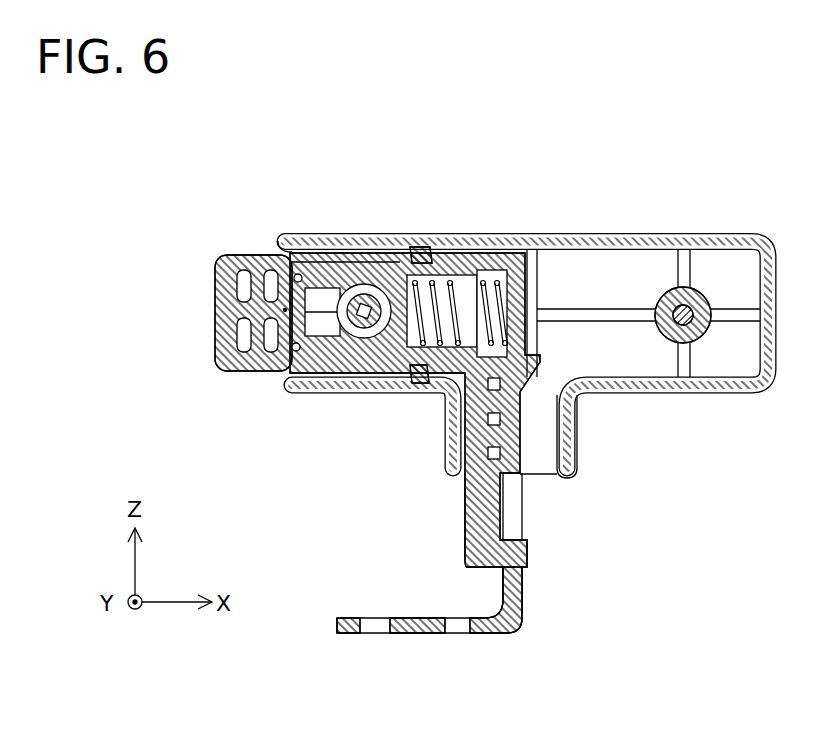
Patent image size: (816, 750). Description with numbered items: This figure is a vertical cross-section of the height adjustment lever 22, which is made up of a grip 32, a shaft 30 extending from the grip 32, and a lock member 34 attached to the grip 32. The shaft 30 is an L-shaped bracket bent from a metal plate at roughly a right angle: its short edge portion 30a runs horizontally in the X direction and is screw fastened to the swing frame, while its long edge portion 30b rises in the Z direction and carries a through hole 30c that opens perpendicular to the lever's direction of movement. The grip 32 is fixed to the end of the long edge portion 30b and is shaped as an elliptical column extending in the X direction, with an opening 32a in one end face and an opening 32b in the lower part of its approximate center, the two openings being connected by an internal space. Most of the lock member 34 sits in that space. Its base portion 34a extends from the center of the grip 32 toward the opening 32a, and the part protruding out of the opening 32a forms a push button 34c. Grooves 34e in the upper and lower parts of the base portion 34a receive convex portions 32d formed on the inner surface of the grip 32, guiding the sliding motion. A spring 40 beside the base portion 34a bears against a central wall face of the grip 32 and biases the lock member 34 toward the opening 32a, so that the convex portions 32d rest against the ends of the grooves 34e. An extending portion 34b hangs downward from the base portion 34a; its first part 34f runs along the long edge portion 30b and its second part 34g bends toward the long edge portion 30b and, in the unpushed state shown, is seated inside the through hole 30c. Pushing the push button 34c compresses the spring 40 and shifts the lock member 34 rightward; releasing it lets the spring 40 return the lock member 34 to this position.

The height adjustment lever 22 is at (174, 147).
The shaft 30 is at (521, 566).
The short edge portion 30a is at (422, 635).
The long edge portion 30b is at (513, 510).
The through hole 30c is at (504, 571).
The grip 32 is at (619, 231).
The opening 32a is at (276, 238).
The opening 32b is at (578, 466).
The convex portions 32d is at (422, 247).
The lock member 34 is at (327, 365).
The base portion 34a is at (335, 363).
The extending portion 34b is at (480, 432).
The push button 34c is at (216, 305).
The grooves 34e is at (383, 252).
The first part 34f is at (480, 506).
The second part 34g is at (500, 567).
The spring 40 is at (462, 292).